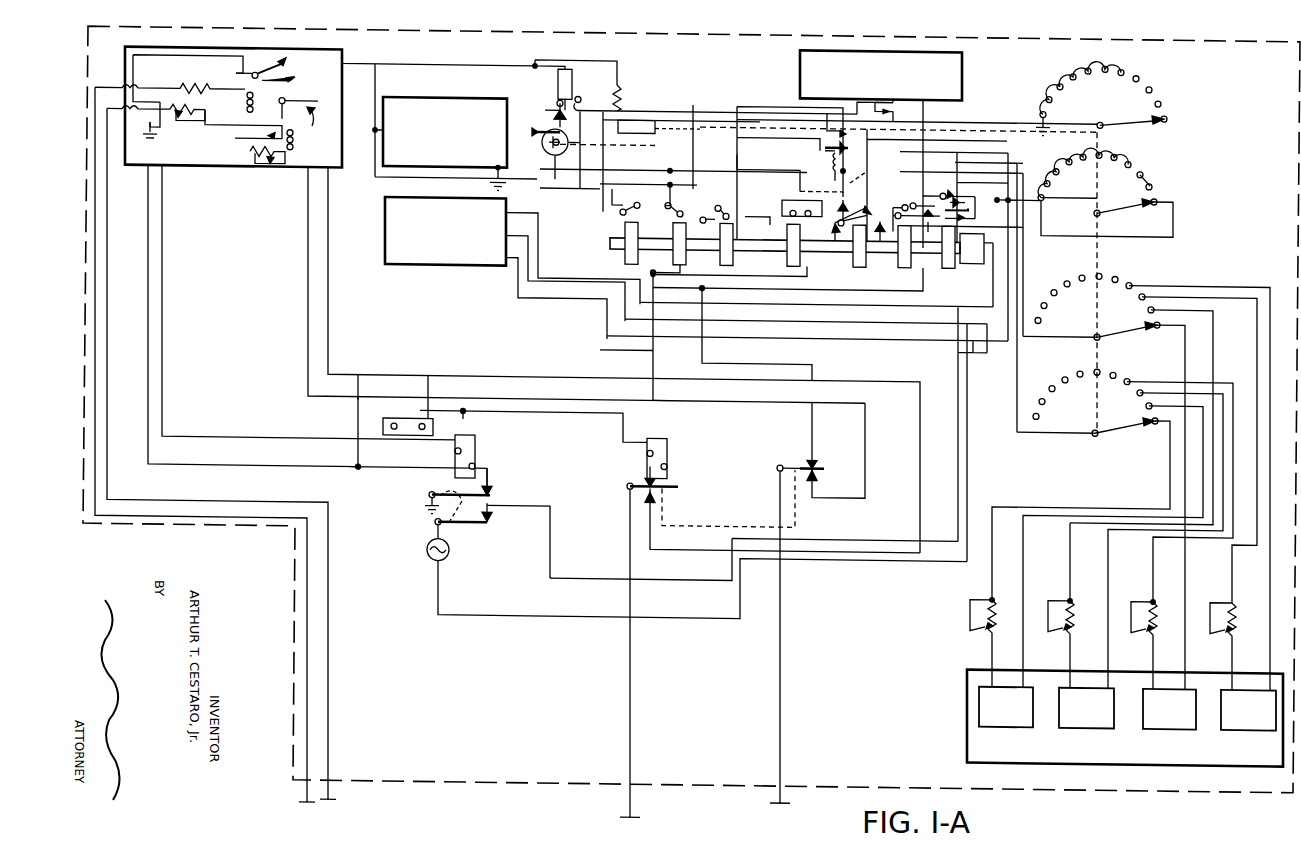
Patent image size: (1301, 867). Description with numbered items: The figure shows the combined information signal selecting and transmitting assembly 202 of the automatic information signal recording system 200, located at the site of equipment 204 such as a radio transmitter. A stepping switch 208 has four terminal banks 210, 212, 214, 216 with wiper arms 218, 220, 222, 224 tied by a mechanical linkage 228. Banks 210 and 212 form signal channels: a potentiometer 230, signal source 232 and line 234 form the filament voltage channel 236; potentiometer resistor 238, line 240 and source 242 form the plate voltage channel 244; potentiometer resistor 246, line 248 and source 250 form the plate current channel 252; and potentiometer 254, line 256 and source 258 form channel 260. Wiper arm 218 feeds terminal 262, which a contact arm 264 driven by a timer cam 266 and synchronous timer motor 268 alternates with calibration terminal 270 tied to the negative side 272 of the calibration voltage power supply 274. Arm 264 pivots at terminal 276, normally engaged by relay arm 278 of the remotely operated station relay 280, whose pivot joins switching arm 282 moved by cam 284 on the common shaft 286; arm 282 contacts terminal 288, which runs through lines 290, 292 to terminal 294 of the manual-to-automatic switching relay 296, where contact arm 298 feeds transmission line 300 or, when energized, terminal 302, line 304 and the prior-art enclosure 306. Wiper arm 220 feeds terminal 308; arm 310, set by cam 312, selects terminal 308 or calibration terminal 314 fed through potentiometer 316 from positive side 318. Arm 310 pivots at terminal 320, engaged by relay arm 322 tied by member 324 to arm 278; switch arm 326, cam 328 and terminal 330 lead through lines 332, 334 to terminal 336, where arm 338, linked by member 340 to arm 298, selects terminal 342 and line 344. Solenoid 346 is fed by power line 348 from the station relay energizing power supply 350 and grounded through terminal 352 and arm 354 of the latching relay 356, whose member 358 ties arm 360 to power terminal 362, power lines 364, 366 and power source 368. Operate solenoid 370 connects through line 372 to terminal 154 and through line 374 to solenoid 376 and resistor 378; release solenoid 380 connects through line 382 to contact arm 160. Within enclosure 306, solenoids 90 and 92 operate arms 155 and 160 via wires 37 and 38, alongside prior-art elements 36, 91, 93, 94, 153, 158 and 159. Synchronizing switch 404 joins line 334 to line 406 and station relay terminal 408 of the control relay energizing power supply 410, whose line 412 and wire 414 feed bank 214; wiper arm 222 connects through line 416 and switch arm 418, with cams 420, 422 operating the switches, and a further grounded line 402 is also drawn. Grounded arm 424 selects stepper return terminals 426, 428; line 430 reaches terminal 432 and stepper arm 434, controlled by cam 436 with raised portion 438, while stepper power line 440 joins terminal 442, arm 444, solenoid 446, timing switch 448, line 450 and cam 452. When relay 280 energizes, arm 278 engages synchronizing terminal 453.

The input lead 36 is at (125, 90).
The wire 37 is at (95, 100).
The wire 38 is at (307, 792).
The solenoid 90 is at (237, 100).
The resistor 91 is at (190, 86).
The solenoid 92 is at (270, 132).
The resistor 93 is at (260, 155).
The resistor 94 is at (182, 107).
The transformer winding 153 is at (168, 130).
The terminal 154 is at (292, 80).
The movable arm 155 is at (256, 68).
The switch arm 158 is at (285, 58).
The contact arm 159 is at (319, 123).
The movable contact arm 160 is at (286, 93).
The automatic information signal recording system 200 is at (393, 525).
The combined information signal selecting and transmitting assembly 202 is at (430, 778).
The equipment 204 is at (1022, 755).
The stepping switch 208 is at (1073, 444).
The contact bank 210 is at (1079, 404).
The contact bank 212 is at (1124, 294).
The synchronizing terminal bank 214 is at (1080, 186).
The stepper return terminal bank 216 is at (1106, 86).
The wiper arm 218 is at (1140, 412).
The wiper arm 220 is at (1115, 320).
The wiper arm 222 is at (1143, 193).
The wiper arm 224 is at (1150, 104).
The mechanical linkage 228 is at (600, 137).
The potentiometer 230 is at (988, 582).
The signal source 232 is at (983, 714).
The line 234 is at (1023, 576).
The filament voltage information signal channel 236 is at (1018, 649).
The potentiometer resistor 238 is at (1068, 580).
The line 240 is at (1108, 572).
The second information signal source 242 is at (1063, 714).
The plate voltage information signal channel 244 is at (1098, 648).
The potentiometer resistor 246 is at (1151, 580).
The line 248 is at (1185, 572).
The signal information source 250 is at (1147, 714).
The plate current information signal channel 252 is at (1176, 647).
The potentiometer 254 is at (1231, 580).
The line 256 is at (1268, 578).
The information signal source 258 is at (1228, 714).
The information signal channel 260 is at (1258, 646).
The information voltage signal terminal 262 is at (968, 210).
The movable contact arm 264 is at (968, 205).
The rotary information signal timer cam 266 is at (948, 258).
The synchronous timer motor 268 is at (959, 269).
The calibration voltage terminal 270 is at (982, 197).
The negative side 272 is at (923, 90).
The calibration voltage power supply 274 is at (800, 52).
The second information signal terminal 276 is at (970, 197).
The relay arm 278 is at (914, 204).
The remotely operated station relay 280 is at (790, 153).
The movable switching contact arm 282 is at (916, 220).
The switching cam 284 is at (905, 258).
The common shaft 286 is at (610, 236).
The switching terminal 288 is at (936, 221).
The line 290 is at (775, 280).
The line 292 is at (702, 356).
The terminal 294 is at (818, 456).
The manual-to-automatic switching relay 296 is at (727, 460).
The movable contact arm 298 is at (787, 457).
The signal transmission line 300 is at (781, 770).
The terminal 302 is at (816, 468).
The line 304 is at (308, 195).
The enclosure 306 is at (342, 47).
The information signal terminal 308 is at (878, 231).
The information signal channel movable contact arm 310 is at (844, 221).
The information signal timing cam 312 is at (858, 258).
The calibration signal terminal 314 is at (872, 192).
The potentiometer 316 is at (908, 114).
The positive side 318 is at (899, 104).
The information signal relay terminal 320 is at (838, 204).
The information signal movable relay arm 322 is at (802, 207).
The mechanical member 324 is at (855, 170).
The movable switch arm 326 is at (790, 206).
The information signal channel switching cam 328 is at (782, 258).
The information signal channel terminal 330 is at (828, 232).
The information signal line 332 is at (732, 266).
The line 334 is at (645, 342).
The switching relay terminal 336 is at (645, 472).
The movable contact arm 338 is at (640, 490).
The member 340 is at (758, 514).
The terminal 342 is at (648, 500).
The line 344 is at (343, 192).
The solenoid 346 is at (667, 442).
The power line 348 is at (375, 80).
The station relay energizing power supply 350 is at (405, 92).
The grounding terminal 352 is at (489, 480).
The movable contact arm 354 is at (428, 490).
The latching relay 356 is at (515, 424).
The member 358 is at (442, 486).
The movable contact arm 360 is at (452, 518).
The power terminal 362 is at (490, 509).
The power line 364 is at (958, 346).
The power line 366 is at (973, 352).
The power source 368 is at (430, 560).
The operate solenoid 370 is at (476, 442).
The line 372 is at (300, 462).
The line 374 is at (498, 172).
The solenoid 376 is at (821, 193).
The resistor 378 is at (622, 95).
The release solenoid 380 is at (398, 392).
The line 382 is at (310, 434).
The positive terminal 402 is at (630, 775).
The synchronizing switch 404 is at (682, 201).
The line 406 is at (518, 282).
The station relay terminal 408 is at (835, 170).
The control relay energizing power supply 410 is at (402, 192).
The line 412 is at (577, 291).
The wire 414 is at (575, 271).
The electric power line 416 is at (1056, 202).
The synchronizing switch arm 418 is at (720, 210).
The synchronizer cam 420 is at (669, 311).
The synchronizer cam 422 is at (738, 262).
The movable contact arm 424 is at (818, 137).
The stepper return terminal 426 is at (814, 165).
The stepper return terminal 428 is at (825, 126).
The electric power line 430 is at (660, 181).
The stepper relay terminal 432 is at (542, 142).
The movable contact stepper arm 434 is at (532, 126).
The stepper return cam 436 is at (545, 150).
The raised portion 438 is at (552, 115).
The stepper power line 440 is at (659, 127).
The stepper relay terminal 442 is at (552, 95).
The stepper movable contact arm 444 is at (579, 89).
The stepper relay solenoid 446 is at (572, 65).
The cam operated stepper return timing switch 448 is at (650, 200).
The line 450 is at (660, 103).
The stepper return timing cam 452 is at (622, 248).
The synchronizing signal terminal 453 is at (950, 180).